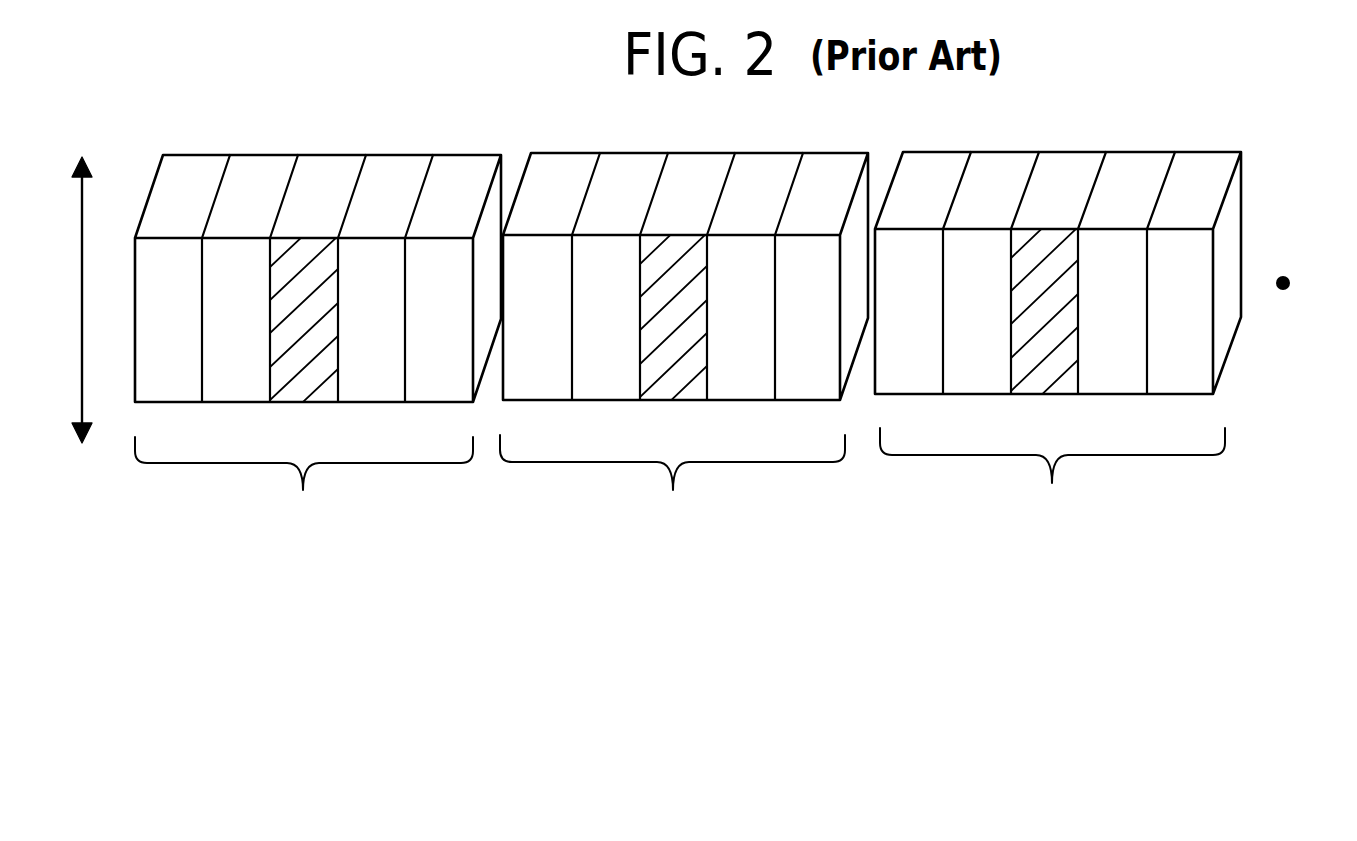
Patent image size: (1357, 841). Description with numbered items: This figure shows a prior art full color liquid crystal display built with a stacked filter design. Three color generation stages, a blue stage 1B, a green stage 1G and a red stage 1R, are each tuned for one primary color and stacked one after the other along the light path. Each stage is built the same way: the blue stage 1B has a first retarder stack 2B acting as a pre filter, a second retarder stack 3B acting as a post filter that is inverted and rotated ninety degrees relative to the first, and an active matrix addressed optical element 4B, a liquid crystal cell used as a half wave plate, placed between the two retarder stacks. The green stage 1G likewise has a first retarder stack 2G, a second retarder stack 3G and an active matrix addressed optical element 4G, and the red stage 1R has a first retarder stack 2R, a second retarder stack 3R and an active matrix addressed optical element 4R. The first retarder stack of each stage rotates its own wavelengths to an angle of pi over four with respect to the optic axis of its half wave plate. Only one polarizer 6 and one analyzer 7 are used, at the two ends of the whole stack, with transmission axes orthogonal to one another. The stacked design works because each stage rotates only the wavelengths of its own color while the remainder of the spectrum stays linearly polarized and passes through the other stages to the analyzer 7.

The blue color generation stage 1B is at (318, 344).
The green color generation stage 1G is at (684, 342).
The red color generation stage 1R is at (1058, 341).
The first retarder stack of blue stage 2B is at (232, 146).
The second retarder stack of blue stage 3B is at (433, 146).
The active matrix addressed optical element of blue stage 4B is at (340, 172).
The first retarder stack of green stage 2G is at (573, 256).
The second retarder stack of green stage 3G is at (776, 256).
The active matrix addressed optical element of green stage 4G is at (687, 271).
The first retarder stack of red stage 2R is at (944, 252).
The second retarder stack of red stage 3R is at (1146, 252).
The active matrix addressed optical element of red stage 4R is at (1058, 267).
The polarizer 6 is at (68, 265).
The analyzer 7 is at (1294, 258).